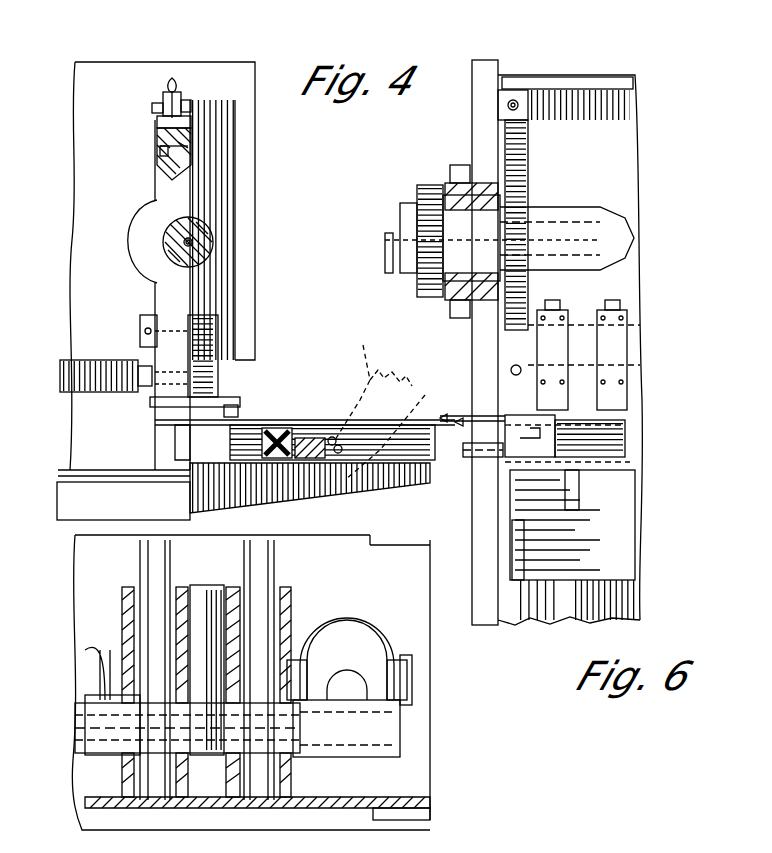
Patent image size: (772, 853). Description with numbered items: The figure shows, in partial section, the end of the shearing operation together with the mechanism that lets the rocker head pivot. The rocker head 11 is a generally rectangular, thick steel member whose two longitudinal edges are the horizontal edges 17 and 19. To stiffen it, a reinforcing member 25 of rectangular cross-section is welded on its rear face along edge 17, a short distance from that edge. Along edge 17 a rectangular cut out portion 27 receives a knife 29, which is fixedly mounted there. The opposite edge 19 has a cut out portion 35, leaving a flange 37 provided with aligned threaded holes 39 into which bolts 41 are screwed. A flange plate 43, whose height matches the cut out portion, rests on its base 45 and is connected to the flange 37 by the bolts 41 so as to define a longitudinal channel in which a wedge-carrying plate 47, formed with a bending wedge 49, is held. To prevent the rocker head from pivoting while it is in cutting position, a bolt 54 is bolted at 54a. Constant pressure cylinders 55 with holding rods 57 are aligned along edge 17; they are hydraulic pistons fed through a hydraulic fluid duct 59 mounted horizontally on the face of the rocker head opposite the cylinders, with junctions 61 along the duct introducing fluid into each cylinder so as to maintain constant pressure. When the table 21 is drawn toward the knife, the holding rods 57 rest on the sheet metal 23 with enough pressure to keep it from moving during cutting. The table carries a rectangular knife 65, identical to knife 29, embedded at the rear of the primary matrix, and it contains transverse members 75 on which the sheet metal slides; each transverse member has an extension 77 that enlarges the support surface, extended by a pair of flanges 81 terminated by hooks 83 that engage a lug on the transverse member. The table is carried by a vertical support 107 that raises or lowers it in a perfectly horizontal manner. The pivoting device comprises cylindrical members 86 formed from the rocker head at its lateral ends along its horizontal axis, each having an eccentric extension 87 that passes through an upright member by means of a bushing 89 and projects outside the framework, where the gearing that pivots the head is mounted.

In FIG. 4, the rocker head 11 is at (165, 290).
In FIG. 6, the rocker head 11 is at (630, 288).
In FIG. 4, the horizontal edge 17 is at (130, 485).
In FIG. 4, the horizontal edge 19 is at (158, 112).
In FIG. 4, the table 21 is at (430, 468).
In FIG. 6, the table 21 is at (635, 465).
In FIG. 4, the sheet metal 23 is at (300, 425).
In FIG. 4, the reinforcing member 25 is at (90, 372).
In FIG. 4, the cut out portion 27 is at (178, 442).
In FIG. 4, the knife 29 is at (455, 418).
In FIG. 6, the knife 29 is at (525, 408).
In FIG. 4, the cut out portion 35 is at (185, 165).
In FIG. 4, the flange 37 is at (185, 120).
In FIG. 4, the threaded holes 39 is at (185, 145).
In FIG. 4, the bolts 41 is at (165, 146).
In FIG. 4, the flange plate 43 is at (158, 136).
In FIG. 4, the base 45 is at (160, 152).
In FIG. 4, the wedge-carrying plate 47 is at (186, 100).
In FIG. 4, the bending wedge 49 is at (172, 92).
In FIG. 4, the bolt 54 is at (185, 118).
In FIG. 4, the bolting location 54a is at (158, 103).
In FIG. 4, the constant pressure cylinders 55 is at (220, 395).
In FIG. 6, the constant pressure cylinders 55 is at (628, 400).
In FIG. 4, the holding rods 57 is at (235, 412).
In FIG. 6, the holding rods 57 is at (625, 418).
In FIG. 6, the hydraulic fluid duct 59 is at (575, 335).
In FIG. 6, the junctions 61 is at (630, 360).
In FIG. 4, the rectangular knife 65 is at (240, 462).
In FIG. 4, the adjusting screw 75 is at (200, 445).
In FIG. 4, the extension 77 is at (415, 398).
In FIG. 4, the flanges 81 is at (370, 387).
In FIG. 4, the hook 83 is at (385, 485).
In FIG. 4, the cylindrical members 86 is at (150, 205).
In FIG. 6, the cylindrical members 86 is at (625, 203).
In FIG. 4, the extension 87 is at (205, 248).
In FIG. 6, the bushing 89 is at (500, 205).
In FIG. 4, the vertical support 107 is at (205, 580).
In FIG. 6, the vertical support 107 is at (620, 535).